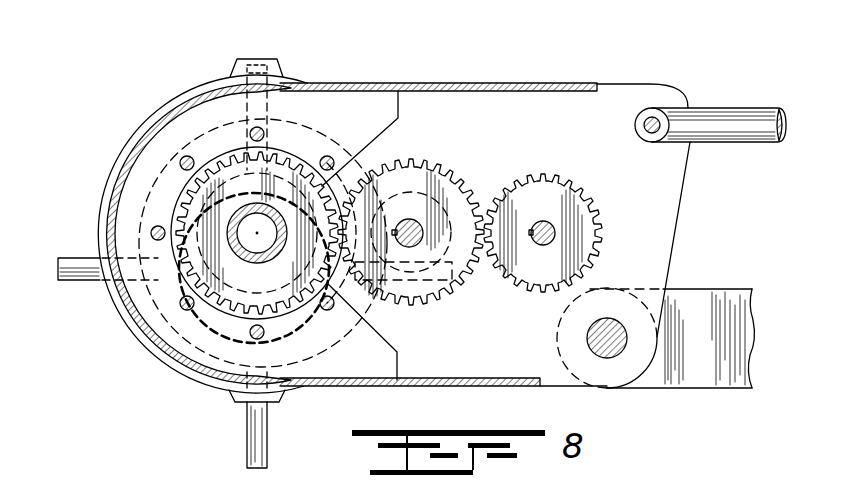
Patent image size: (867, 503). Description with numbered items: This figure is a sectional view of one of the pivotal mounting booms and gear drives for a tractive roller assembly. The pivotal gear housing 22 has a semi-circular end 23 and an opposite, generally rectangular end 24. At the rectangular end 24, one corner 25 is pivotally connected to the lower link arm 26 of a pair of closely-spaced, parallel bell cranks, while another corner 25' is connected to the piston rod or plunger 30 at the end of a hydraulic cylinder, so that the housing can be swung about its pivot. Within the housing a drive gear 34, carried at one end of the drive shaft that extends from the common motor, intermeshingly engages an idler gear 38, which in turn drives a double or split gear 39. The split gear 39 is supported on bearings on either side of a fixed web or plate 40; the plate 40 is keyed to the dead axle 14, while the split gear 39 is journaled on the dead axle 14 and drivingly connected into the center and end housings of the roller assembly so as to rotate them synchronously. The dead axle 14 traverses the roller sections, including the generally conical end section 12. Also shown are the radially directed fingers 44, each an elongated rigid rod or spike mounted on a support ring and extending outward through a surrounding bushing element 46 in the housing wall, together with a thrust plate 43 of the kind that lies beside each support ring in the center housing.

The conical end section 12 is at (96, 228).
The dead axle 14 is at (247, 235).
The pivotal gear housing 22 is at (133, 141).
The semi-circular end 23 is at (137, 323).
The rectangular end 24 is at (679, 230).
The corner 25 is at (607, 351).
The corner 25' is at (678, 97).
The lower link arm 26 is at (700, 386).
The piston rod 30 is at (729, 108).
The drive gear 34 is at (563, 185).
The idler gear 38 is at (424, 162).
The split gear 39 is at (293, 163).
The fixed plate 40 is at (120, 171).
The thrust plate 43 is at (8, 480).
The finger 44 is at (297, 77).
The bushing element 46 is at (273, 66).